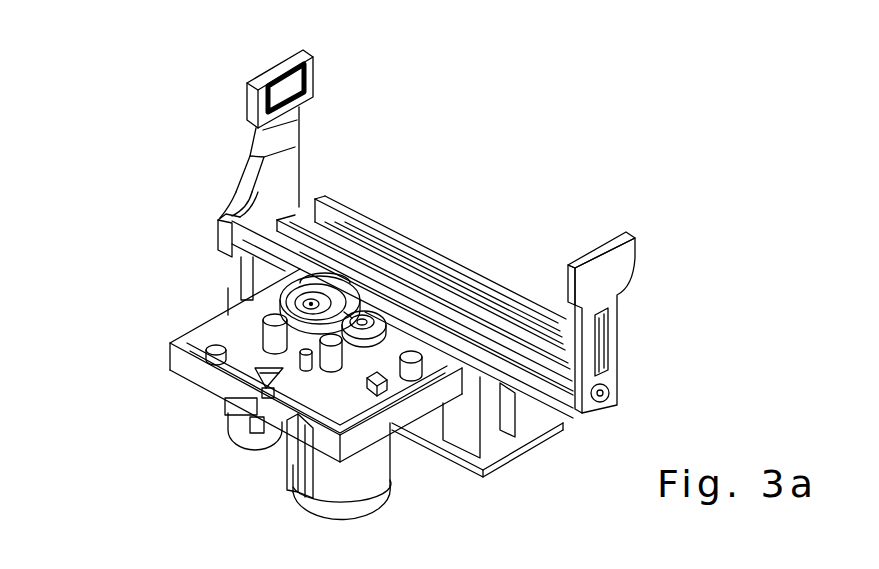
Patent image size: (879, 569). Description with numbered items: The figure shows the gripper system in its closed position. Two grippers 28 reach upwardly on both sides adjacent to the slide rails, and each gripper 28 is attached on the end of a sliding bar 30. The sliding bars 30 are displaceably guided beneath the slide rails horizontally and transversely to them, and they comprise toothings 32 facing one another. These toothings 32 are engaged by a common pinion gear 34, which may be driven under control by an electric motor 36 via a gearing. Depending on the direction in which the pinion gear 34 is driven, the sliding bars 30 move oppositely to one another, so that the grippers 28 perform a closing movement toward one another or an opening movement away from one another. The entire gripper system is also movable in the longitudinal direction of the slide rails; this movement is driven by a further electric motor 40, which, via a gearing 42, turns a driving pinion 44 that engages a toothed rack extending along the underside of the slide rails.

The gripper 28 is at (505, 212).
The sliding bar 30 is at (282, 250).
The toothing 32 is at (463, 243).
The pinion gear 34 is at (444, 242).
The electric motor 36 is at (163, 449).
The further electric motor 40 is at (363, 510).
The gearing 42 is at (162, 407).
The driving pinion 44 is at (441, 201).